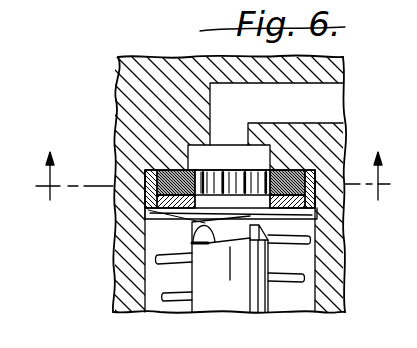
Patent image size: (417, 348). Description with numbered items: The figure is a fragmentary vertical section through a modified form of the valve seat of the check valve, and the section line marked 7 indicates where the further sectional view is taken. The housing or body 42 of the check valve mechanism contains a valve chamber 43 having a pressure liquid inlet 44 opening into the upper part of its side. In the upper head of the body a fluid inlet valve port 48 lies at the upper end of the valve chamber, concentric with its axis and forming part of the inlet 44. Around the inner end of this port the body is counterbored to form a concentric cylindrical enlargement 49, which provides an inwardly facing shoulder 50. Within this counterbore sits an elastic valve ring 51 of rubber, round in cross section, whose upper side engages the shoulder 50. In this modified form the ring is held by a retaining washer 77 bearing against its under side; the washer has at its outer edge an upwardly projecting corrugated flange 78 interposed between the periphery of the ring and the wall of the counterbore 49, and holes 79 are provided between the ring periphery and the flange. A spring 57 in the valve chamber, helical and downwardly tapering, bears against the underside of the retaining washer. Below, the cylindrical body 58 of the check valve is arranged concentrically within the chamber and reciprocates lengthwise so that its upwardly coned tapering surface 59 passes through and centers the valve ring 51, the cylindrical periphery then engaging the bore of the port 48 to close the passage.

The housing or body of the check valve mechanism 42 is at (121, 68).
The valve chamber 43 is at (153, 281).
The pressure liquid inlet 44 is at (276, 114).
The fluid inlet valve port 48 is at (229, 157).
The cylindrical enlargement 49 is at (114, 180).
The inwardly facing shoulder 50 is at (172, 176).
The elastic valve ring 51 is at (290, 176).
The spring 57 is at (163, 296).
The cylindrical body of the check valve 58 is at (216, 302).
The tapering surface 59 is at (244, 230).
The retaining washer 77 is at (213, 222).
The corrugated flange 78 is at (143, 191).
The holes 79 is at (318, 218).
The section line 7- 7 is at (210, 176).